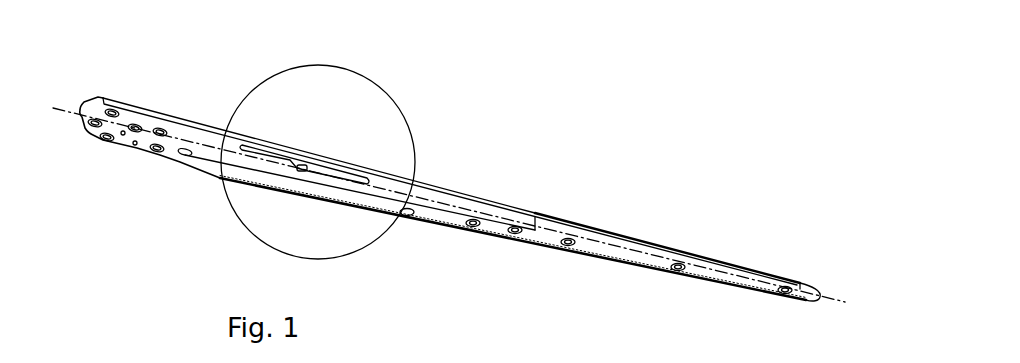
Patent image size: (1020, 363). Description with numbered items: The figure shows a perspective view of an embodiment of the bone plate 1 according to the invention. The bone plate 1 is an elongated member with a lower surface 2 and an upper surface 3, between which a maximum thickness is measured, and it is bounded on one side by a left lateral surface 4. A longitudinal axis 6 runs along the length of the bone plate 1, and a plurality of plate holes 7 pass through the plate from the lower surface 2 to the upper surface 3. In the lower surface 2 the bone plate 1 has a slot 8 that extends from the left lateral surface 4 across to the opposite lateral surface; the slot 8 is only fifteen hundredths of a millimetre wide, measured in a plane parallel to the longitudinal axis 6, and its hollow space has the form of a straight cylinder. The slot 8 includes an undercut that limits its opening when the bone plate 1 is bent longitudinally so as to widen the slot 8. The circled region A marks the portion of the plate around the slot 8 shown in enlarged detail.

The bone plate 1 is at (667, 130).
The lower surface 2 is at (438, 215).
The upper surface 3 is at (512, 202).
The left lateral surface 4 is at (200, 126).
The longitudinal axis 6 is at (432, 198).
The plate holes 7 is at (580, 252).
The slot 8 is at (303, 173).
The detail region A is at (392, 96).